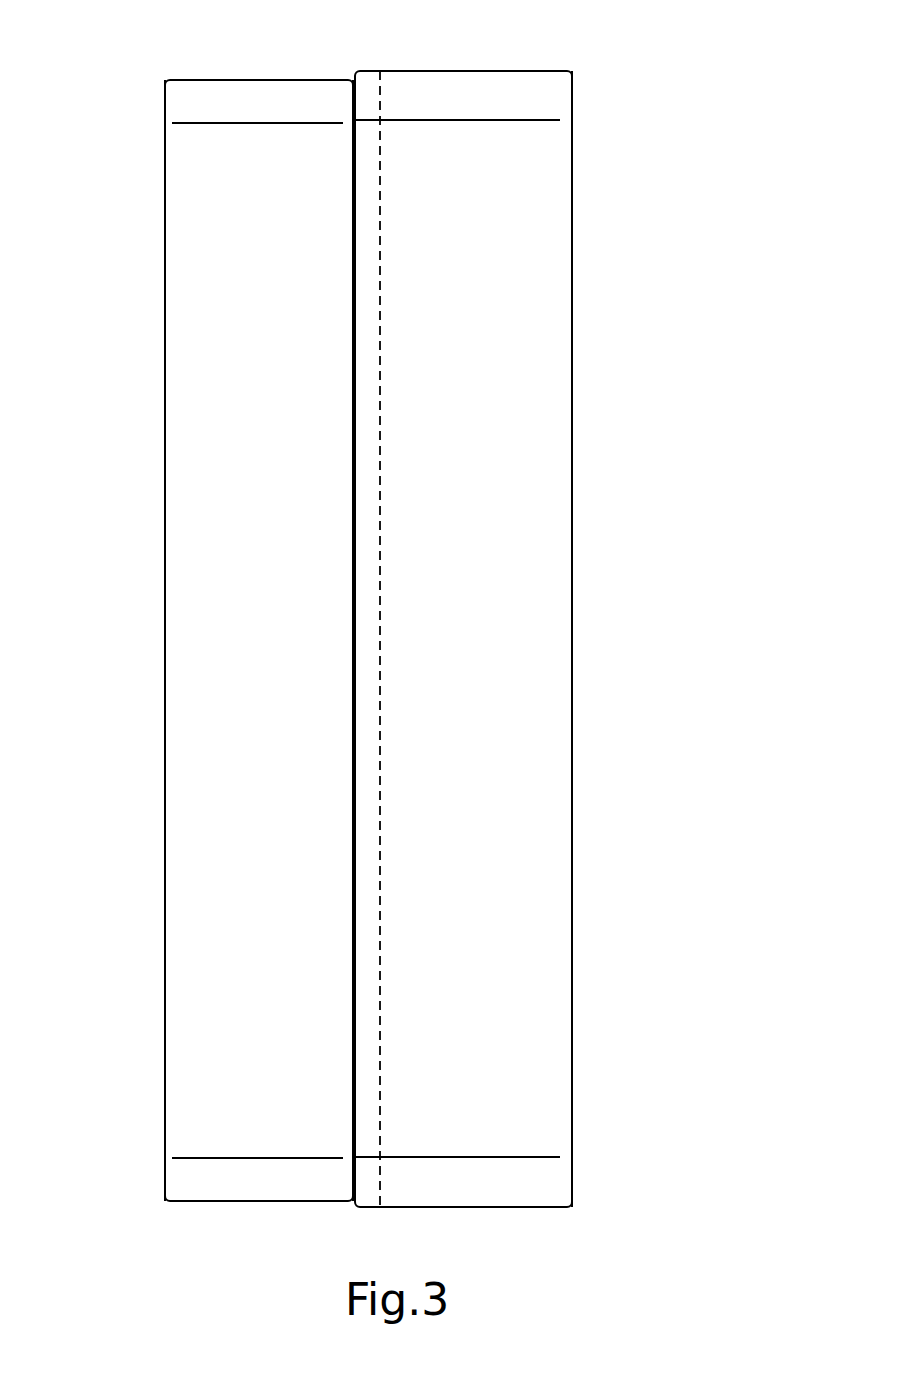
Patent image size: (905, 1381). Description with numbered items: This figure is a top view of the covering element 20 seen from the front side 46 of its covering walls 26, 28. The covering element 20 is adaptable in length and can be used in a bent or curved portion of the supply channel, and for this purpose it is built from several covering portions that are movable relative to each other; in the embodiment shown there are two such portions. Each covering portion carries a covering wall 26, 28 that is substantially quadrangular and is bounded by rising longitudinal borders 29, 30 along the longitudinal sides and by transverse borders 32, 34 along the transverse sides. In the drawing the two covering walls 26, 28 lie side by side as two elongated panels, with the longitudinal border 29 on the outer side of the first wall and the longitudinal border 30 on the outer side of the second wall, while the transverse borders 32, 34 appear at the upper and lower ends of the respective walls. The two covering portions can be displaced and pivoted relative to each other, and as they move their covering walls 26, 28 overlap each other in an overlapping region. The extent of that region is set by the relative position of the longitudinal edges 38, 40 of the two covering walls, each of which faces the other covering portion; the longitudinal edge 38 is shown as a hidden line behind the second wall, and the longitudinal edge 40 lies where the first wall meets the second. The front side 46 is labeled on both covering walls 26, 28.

The covering element 20 is at (663, 160).
The covering wall 26 is at (210, 318).
The covering wall 28 is at (510, 298).
The longitudinal border 29 is at (165, 733).
The longitudinal border 30 is at (572, 698).
The transverse border 32 is at (233, 80).
The transverse border 34 is at (477, 72).
The longitudinal edge 38 is at (382, 438).
The longitudinal edge 40 is at (352, 515).
The front side 46 is at (268, 609).